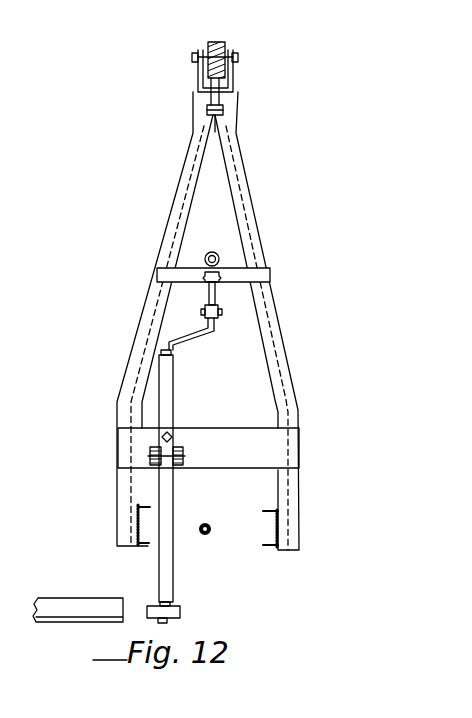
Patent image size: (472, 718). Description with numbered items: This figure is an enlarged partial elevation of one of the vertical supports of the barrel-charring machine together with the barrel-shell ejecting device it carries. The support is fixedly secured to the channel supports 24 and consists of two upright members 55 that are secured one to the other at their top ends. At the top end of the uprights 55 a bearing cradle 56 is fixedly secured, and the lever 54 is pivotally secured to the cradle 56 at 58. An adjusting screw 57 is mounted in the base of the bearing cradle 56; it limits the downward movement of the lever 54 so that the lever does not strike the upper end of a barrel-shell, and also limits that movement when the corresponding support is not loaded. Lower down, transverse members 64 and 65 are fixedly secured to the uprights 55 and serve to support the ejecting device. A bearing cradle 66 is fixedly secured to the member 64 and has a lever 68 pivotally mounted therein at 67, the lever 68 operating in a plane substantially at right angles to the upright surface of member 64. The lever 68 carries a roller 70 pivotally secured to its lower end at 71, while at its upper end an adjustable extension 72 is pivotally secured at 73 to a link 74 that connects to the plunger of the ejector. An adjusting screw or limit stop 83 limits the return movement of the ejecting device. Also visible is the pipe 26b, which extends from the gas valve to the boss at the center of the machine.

The channel support 24 is at (138, 505).
The pipe 26b is at (209, 534).
The lever 54 is at (212, 42).
The upright member 55 is at (152, 331).
The bearing cradle 56 is at (238, 82).
The adjusting screw 57 is at (210, 98).
The pivotal connection 58 is at (240, 60).
The transverse member 64 is at (250, 432).
The transverse member 65 is at (183, 270).
The bearing cradle 66 is at (181, 452).
The pivot 67 is at (182, 461).
The lever 68 is at (167, 387).
The roller 70 is at (178, 607).
The pivot 71 is at (168, 622).
The adjustable extension 72 is at (188, 338).
The pivot 73 is at (222, 311).
The link 74 is at (215, 293).
The adjusting screw or limit stop 83 is at (172, 435).